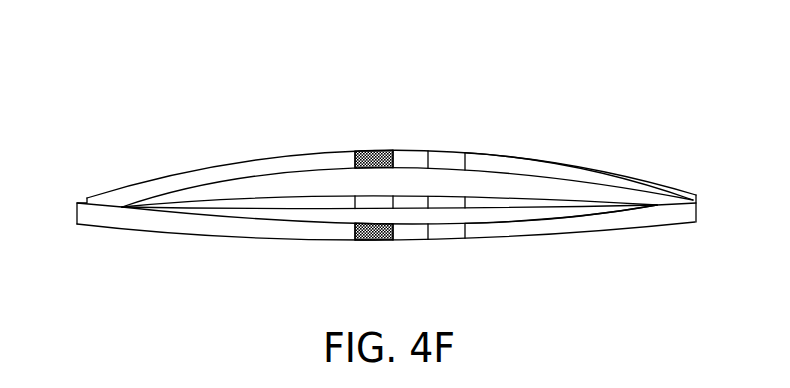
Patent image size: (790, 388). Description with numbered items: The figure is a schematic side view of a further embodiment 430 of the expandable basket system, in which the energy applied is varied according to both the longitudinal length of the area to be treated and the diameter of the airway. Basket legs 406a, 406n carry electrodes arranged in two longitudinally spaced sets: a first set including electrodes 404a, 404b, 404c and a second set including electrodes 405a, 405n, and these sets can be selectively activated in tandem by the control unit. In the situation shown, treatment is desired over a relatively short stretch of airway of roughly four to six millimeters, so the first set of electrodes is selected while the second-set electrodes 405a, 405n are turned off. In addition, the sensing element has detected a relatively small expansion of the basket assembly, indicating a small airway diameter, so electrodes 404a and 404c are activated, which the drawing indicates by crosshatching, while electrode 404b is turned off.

The embodiment 430 is at (157, 140).
The electrode 404a is at (378, 152).
The electrode 404b is at (370, 194).
The electrode 404c is at (370, 242).
The electrode 405a is at (445, 152).
The electrode 405n is at (443, 242).
The basket leg 406a is at (562, 175).
The basket leg 406n is at (563, 242).